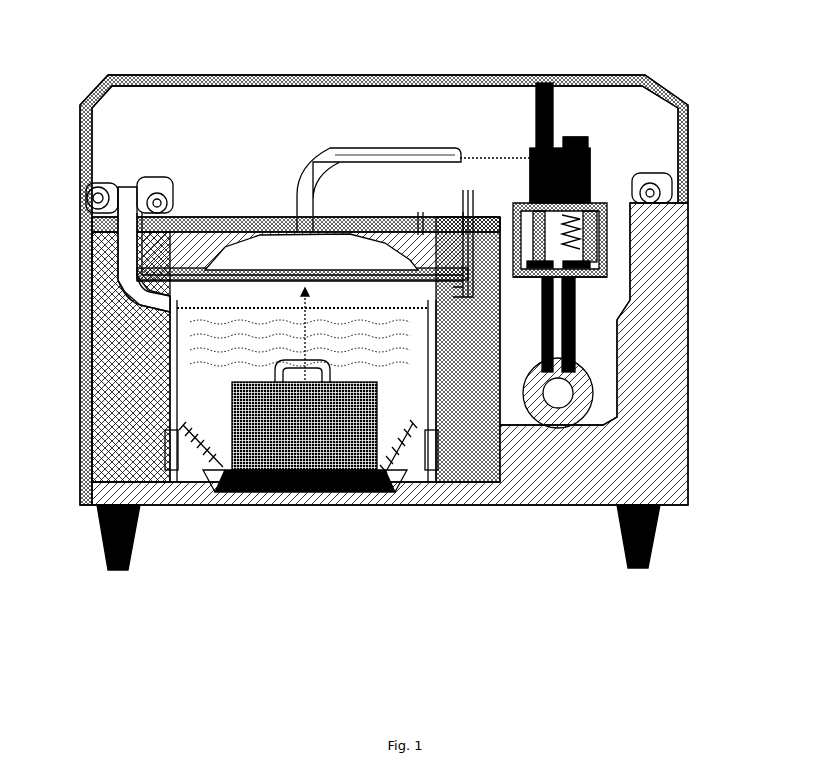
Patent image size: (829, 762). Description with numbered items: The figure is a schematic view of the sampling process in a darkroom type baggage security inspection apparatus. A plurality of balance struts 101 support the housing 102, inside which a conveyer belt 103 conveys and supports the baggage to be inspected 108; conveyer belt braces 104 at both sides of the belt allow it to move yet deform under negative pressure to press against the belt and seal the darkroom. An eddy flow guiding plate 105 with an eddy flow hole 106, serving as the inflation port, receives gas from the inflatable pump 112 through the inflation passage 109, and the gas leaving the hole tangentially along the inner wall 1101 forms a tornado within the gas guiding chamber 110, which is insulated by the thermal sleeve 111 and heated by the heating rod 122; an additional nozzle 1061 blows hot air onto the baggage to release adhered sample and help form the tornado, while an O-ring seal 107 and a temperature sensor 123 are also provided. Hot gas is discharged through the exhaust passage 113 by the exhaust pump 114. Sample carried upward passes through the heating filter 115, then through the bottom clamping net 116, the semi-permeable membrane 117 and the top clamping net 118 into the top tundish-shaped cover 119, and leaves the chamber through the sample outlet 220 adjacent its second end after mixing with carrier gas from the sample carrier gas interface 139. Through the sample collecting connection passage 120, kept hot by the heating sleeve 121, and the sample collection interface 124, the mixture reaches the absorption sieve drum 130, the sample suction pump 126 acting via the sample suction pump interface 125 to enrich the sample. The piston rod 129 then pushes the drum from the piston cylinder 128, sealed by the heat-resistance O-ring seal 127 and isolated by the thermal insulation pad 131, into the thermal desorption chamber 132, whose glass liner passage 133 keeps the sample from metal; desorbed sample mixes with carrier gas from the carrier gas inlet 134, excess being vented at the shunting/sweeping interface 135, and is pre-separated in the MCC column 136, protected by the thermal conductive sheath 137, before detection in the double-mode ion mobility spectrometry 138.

The balance strut 101 is at (437, 538).
The housing of the security inspection apparatus 102 is at (428, 291).
The conveyer belt 103 is at (305, 498).
The conveyer belt brace 104 is at (305, 535).
The eddy flow guiding plate 105 is at (290, 490).
The eddy flow hole 106 is at (438, 510).
The O-ring seal 107 is at (516, 433).
The baggage to be inspected 108 is at (327, 455).
The inflation passage 109 is at (190, 492).
The gas guiding chamber 110 is at (100, 389).
The inner wall of the gas guiding chamber 1101 is at (167, 317).
The thermal sleeve 111 is at (72, 394).
The additional nozzle 1061 is at (97, 484).
The inflatable pump 112 is at (70, 193).
The exhaust passage 113 is at (305, 198).
The exhaust pump 114 is at (197, 189).
The heating filter 115 is at (302, 337).
The bottom clamping net 116 is at (308, 332).
The semi-permeable membrane 117 is at (300, 331).
The top clamping net 118 is at (300, 323).
The top tundish-shaped cover 119 is at (303, 189).
The sample collecting connection passage 120 is at (662, 155).
The sample collecting connection passage heating sleeve 121 is at (417, 121).
The heating rod 122 is at (447, 232).
The temperature sensor 123 is at (434, 200).
The sample collection interface 124 is at (596, 128).
The sample suction pump interface 125 is at (580, 175).
The sample suction pump 126 is at (683, 168).
The heat-resistance O-ring seal 127 is at (485, 149).
The piston cylinder 128 is at (515, 79).
The piston rod 129 is at (607, 81).
The absorption sieve drum 130 is at (363, 85).
The thermal insulation pad 131 is at (640, 240).
The thermal desorption chamber 132 is at (650, 246).
The liner passage 133 is at (647, 259).
The carrier gas inlet 134 is at (542, 304).
The shunting/sweeping interface 135 is at (664, 275).
The MCC column 136 is at (657, 324).
The thermal conductive sheath 137 is at (667, 345).
The double-mode ion mobility spectrometry 138 is at (647, 407).
The sample carrier gas interface 139 is at (400, 232).
The sample outlet 220 is at (311, 252).